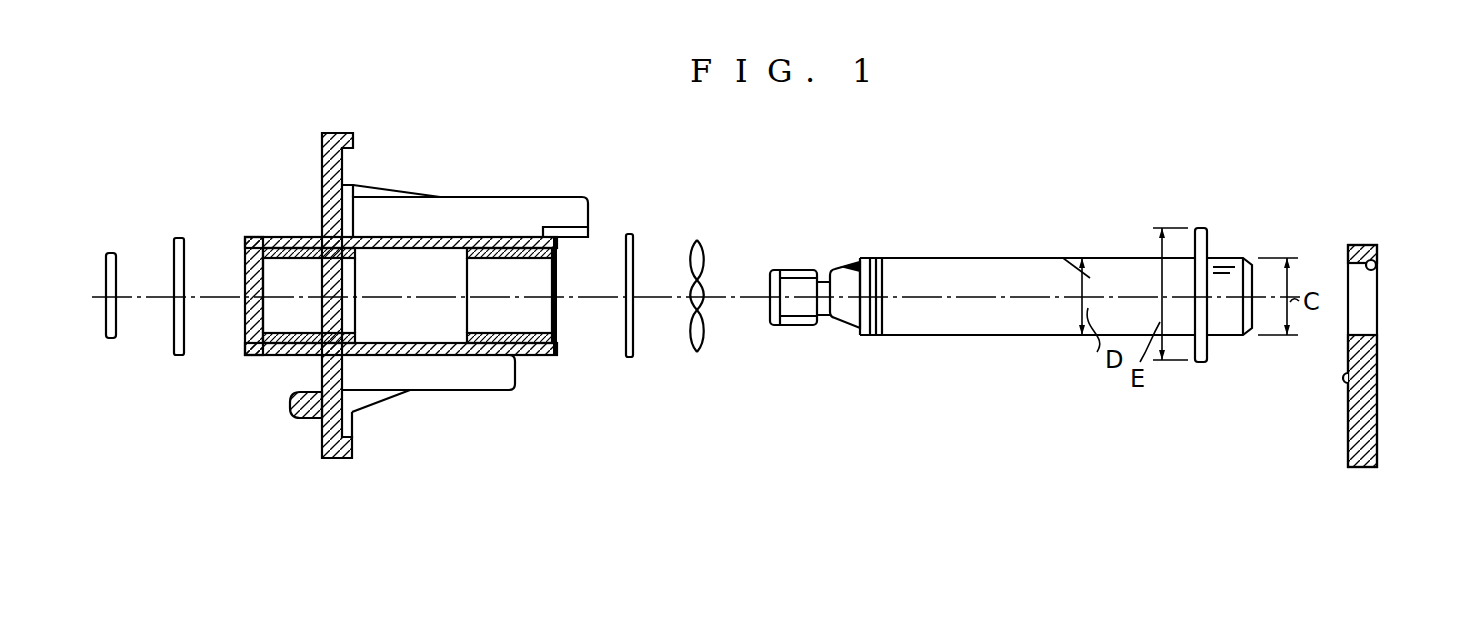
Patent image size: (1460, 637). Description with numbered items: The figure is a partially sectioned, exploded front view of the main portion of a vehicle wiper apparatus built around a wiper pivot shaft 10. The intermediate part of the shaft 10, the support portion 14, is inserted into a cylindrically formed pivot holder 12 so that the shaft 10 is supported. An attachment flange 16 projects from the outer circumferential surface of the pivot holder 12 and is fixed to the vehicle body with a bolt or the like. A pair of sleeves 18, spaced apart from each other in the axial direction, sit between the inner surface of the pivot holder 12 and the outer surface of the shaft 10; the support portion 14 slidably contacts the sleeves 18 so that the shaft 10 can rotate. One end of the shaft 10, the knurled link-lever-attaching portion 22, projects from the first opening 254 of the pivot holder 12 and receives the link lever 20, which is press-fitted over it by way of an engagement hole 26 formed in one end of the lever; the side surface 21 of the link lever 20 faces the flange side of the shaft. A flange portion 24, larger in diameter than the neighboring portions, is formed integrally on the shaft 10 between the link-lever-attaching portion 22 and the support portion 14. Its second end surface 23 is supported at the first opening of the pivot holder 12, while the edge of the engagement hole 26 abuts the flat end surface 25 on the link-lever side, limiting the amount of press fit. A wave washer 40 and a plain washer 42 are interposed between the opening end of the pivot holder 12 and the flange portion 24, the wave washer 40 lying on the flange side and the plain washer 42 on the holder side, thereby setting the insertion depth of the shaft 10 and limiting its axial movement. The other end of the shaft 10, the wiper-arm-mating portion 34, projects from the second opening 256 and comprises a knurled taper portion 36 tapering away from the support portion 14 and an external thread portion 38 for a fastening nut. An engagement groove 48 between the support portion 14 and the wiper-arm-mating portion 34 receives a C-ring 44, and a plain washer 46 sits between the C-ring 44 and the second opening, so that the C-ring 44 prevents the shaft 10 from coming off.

The wiper pivot shaft 10 is at (1030, 316).
The pivot holder 12 is at (289, 232).
The support portion 14 is at (1193, 420).
The attachment flange 16 is at (322, 150).
The sleeves 18 is at (270, 357).
The link lever 20 is at (1357, 358).
The side surface 21 is at (1355, 382).
The link-lever-attaching portion 22 is at (1228, 322).
The second end surface 23 is at (1185, 248).
The flange portion 24 is at (1200, 228).
The flat end surface 25 is at (1212, 250).
The engagement hole 26 is at (1377, 265).
The wiper-arm-mating portion 34 is at (918, 171).
The taper portion 36 is at (853, 262).
The external thread portion 38 is at (803, 270).
The wave washer 40 is at (698, 240).
The plain washer 42 is at (628, 233).
The C-ring 44 is at (108, 253).
The plain washer 46 is at (185, 340).
The engagement groove 48 is at (885, 286).
The first opening 254 is at (583, 355).
The second opening 256 is at (247, 355).